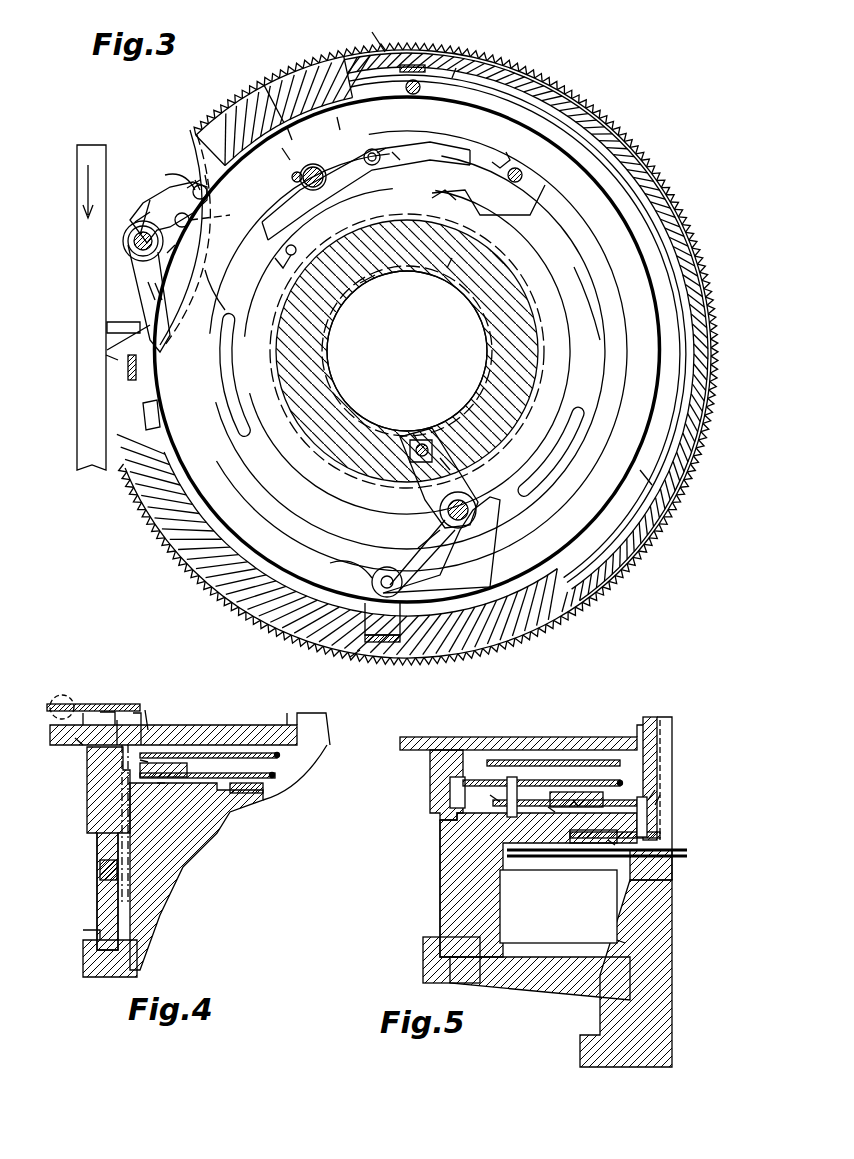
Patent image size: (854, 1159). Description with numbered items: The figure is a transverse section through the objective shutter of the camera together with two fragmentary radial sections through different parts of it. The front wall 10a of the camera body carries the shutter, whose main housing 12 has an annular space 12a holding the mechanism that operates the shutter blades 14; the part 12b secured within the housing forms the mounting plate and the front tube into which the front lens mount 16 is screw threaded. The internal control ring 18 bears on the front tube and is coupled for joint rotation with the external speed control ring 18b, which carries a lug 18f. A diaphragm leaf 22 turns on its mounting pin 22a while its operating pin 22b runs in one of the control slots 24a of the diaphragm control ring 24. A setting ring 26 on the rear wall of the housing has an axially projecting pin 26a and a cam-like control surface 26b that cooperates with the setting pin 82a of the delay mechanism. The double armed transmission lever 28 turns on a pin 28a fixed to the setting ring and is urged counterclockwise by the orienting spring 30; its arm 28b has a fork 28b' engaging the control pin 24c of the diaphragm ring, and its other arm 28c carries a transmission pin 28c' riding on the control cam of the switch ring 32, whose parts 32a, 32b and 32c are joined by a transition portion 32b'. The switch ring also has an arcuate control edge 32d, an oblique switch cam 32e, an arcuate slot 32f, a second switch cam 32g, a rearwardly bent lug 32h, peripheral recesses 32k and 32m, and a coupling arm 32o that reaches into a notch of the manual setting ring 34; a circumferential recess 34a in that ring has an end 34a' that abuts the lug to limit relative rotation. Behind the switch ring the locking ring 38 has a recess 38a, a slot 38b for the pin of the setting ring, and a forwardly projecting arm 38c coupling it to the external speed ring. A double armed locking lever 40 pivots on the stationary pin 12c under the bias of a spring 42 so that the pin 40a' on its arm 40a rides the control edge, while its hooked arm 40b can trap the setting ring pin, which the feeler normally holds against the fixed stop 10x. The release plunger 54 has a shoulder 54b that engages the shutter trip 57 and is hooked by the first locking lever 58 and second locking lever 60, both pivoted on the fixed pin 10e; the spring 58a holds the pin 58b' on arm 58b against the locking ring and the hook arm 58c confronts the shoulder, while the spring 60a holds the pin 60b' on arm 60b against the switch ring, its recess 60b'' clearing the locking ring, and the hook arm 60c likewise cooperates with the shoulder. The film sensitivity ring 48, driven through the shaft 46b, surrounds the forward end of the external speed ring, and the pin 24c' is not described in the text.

In FIG. 4, the front wall of the camera body 10a is at (260, 730).
In FIG. 5, the front wall of the camera body 10a is at (418, 737).
In FIG. 3, the fixed pin 10e is at (155, 283).
In FIG. 4, the fixed pin 10e is at (117, 720).
In FIG. 3, the fixed abutment or stop 10x is at (360, 283).
In FIG. 3, the shutter housing 12 is at (447, 268).
In FIG. 4, the shutter housing 12 is at (212, 820).
In FIG. 5, the shutter housing 12 is at (460, 852).
In FIG. 5, the annular space 12a is at (558, 906).
In FIG. 5, the front tube of the shutter 12b is at (617, 940).
In FIG. 3, the stationary pivot pin 12c is at (317, 150).
In FIG. 5, the shutter blades 14 is at (687, 853).
In FIG. 5, the front lens mount 16 is at (580, 1040).
In FIG. 5, the internal control ring 18 is at (513, 947).
In FIG. 4, the external speed control ring 18b is at (103, 893).
In FIG. 5, the external speed control ring 18b is at (443, 908).
In FIG. 3, the lug or projection 18f is at (440, 52).
In FIG. 5, the diaphragm leaf 22 is at (653, 840).
In FIG. 5, the mounting pin 22a is at (653, 873).
In FIG. 5, the operating pin 22b is at (608, 840).
In FIG. 5, the diaphragm control ring 24 is at (670, 830).
In FIG. 5, the control slots 24a is at (583, 847).
In FIG. 3, the control pin 24c is at (433, 418).
In FIG. 5, the pin end 24c' is at (694, 758).
In FIG. 3, the setting ring 26 is at (263, 380).
In FIG. 4, the setting ring 26 is at (260, 795).
In FIG. 5, the setting ring 26 is at (557, 790).
In FIG. 3, the axially projecting pin 26a is at (333, 323).
In FIG. 3, the cam-like control surface 26b is at (633, 178).
In FIG. 3, the double armed transmission lever 28 is at (435, 492).
In FIG. 5, the double armed transmission lever 28 is at (587, 797).
In FIG. 3, the pin 28a is at (470, 522).
In FIG. 5, the pin 28a is at (573, 800).
In FIG. 3, the arm of the transmission lever 28b is at (465, 447).
In FIG. 3, the fork 28b' is at (395, 416).
In FIG. 5, the fork 28b' is at (698, 773).
In FIG. 3, the other arm of the transmission lever 28c is at (404, 536).
In FIG. 5, the other arm of the transmission lever 28c is at (442, 818).
In FIG. 3, the transmission pin 28c' is at (357, 582).
In FIG. 5, the transmission pin 28c' is at (579, 759).
In FIG. 3, the orienting spring 30 is at (506, 462).
In FIG. 5, the orienting spring 30 is at (548, 807).
In FIG. 3, the switch ring 32 is at (477, 113).
In FIG. 4, the switch ring 32 is at (207, 785).
In FIG. 5, the switch ring 32 is at (592, 780).
In FIG. 3, the control cam part 32a is at (437, 585).
In FIG. 5, the control cam part 32a is at (507, 780).
In FIG. 3, the control cam part 32b is at (410, 352).
In FIG. 3, the transition cam portion 32b' is at (338, 555).
In FIG. 3, the control cam part 32c is at (226, 408).
In FIG. 3, the arcuate control edge 32d is at (432, 198).
In FIG. 3, the switch cam portion 32e is at (497, 158).
In FIG. 3, the arcuate slot 32f is at (600, 453).
In FIG. 3, the switch cam 32g is at (574, 267).
In FIG. 3, the rearwardly bent lug 32h is at (215, 270).
In FIG. 4, the rearwardly bent lug 32h is at (157, 783).
In FIG. 3, the recess 32k is at (285, 147).
In FIG. 3, the recess 32m is at (337, 117).
In FIG. 3, the coupling arm 32o is at (368, 622).
In FIG. 4, the coupling arm 32o is at (350, 657).
In FIG. 5, the coupling arm 32o is at (453, 800).
In FIG. 3, the manual setting ring 34 is at (150, 505).
In FIG. 4, the manual setting ring 34 is at (93, 803).
In FIG. 5, the manual setting ring 34 is at (435, 765).
In FIG. 3, the circumferential recess 34a is at (535, 331).
In FIG. 3, the end of the recess 34a' is at (368, 32).
In FIG. 3, the locking ring 38 is at (287, 127).
In FIG. 4, the locking ring 38 is at (225, 753).
In FIG. 5, the locking ring 38 is at (527, 760).
In FIG. 3, the recess 38a is at (197, 225).
In FIG. 4, the recess 38a is at (148, 760).
In FIG. 3, the circumferential slot 38b is at (432, 193).
In FIG. 3, the lateral forwardly projecting arm 38c is at (143, 420).
In FIG. 4, the lateral forwardly projecting arm 38c is at (100, 862).
In FIG. 3, the double armed locking lever 40 is at (308, 170).
In FIG. 3, the arm of the locking lever 40a is at (360, 142).
In FIG. 3, the pin 40a' is at (401, 131).
In FIG. 3, the hooked arm 40b is at (283, 255).
In FIG. 3, the spring 42 is at (392, 152).
In FIG. 3, the shaft 46b is at (456, 68).
In FIG. 4, the film sensitivity ring 48 is at (85, 940).
In FIG. 5, the film sensitivity ring 48 is at (427, 947).
In FIG. 3, the release plunger 54 is at (88, 148).
In FIG. 4, the release plunger 54 is at (55, 703).
In FIG. 3, the second shoulder 54b is at (108, 360).
In FIG. 4, the second shoulder 54b is at (75, 738).
In FIG. 3, the shutter trigger or trip 57 is at (128, 372).
In FIG. 3, the first locking lever 58 is at (135, 245).
In FIG. 4, the first locking lever 58 is at (83, 713).
In FIG. 3, the spring 58a is at (167, 253).
In FIG. 3, the first arm of the first locking lever 58b is at (114, 230).
In FIG. 3, the pin 58b' is at (229, 192).
In FIG. 4, the pin 58b' is at (143, 693).
In FIG. 3, the second arm of the first locking lever 58c is at (148, 282).
In FIG. 3, the second locking lever 60 is at (152, 200).
In FIG. 4, the second locking lever 60 is at (107, 707).
In FIG. 3, the spring 60a is at (165, 175).
In FIG. 3, the first arm of the second locking lever 60b is at (147, 138).
In FIG. 3, the pin 60b' is at (174, 139).
In FIG. 4, the pin 60b' is at (89, 825).
In FIG. 3, the recess in the pin 60b'' is at (216, 137).
In FIG. 4, the recess in the pin 60b'' is at (168, 694).
In FIG. 3, the second arm of the second locking lever 60c is at (120, 333).
In FIG. 3, the setting pin 82a is at (527, 173).